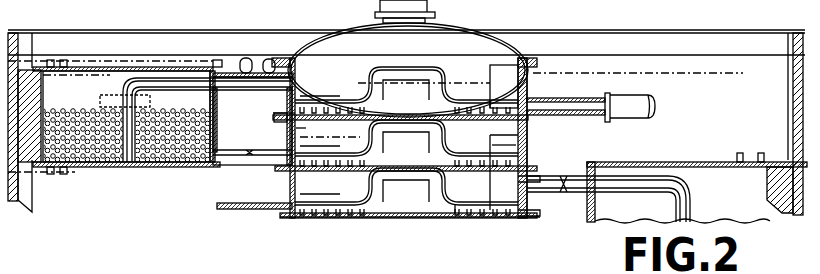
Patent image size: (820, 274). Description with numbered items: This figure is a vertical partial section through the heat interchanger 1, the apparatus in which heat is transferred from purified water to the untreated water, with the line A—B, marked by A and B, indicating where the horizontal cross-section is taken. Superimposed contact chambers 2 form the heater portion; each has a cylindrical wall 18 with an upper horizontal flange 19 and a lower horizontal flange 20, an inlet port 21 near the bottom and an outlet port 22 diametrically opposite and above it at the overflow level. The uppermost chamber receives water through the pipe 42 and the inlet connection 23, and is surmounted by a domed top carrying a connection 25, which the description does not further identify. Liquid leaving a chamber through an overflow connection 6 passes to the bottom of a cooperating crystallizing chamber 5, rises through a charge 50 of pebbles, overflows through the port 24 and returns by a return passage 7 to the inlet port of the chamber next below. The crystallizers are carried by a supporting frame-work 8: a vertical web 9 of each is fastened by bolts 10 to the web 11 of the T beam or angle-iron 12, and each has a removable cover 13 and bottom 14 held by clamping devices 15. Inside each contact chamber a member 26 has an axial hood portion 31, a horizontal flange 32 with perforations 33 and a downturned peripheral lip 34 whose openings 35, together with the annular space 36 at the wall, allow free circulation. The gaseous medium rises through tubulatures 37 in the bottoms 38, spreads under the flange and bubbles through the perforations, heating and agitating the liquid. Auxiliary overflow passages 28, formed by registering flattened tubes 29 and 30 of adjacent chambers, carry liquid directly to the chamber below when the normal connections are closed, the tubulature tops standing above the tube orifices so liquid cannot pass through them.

The heat interchanger 1 is at (410, 131).
The contact chamber 2 is at (528, 86).
The crystallizing chamber 5 is at (126, 151).
The overflow connection 6 is at (266, 59).
The return passage 7 is at (207, 212).
The supporting frame-work 8 is at (14, 33).
The vertical web 9 is at (36, 170).
The bolts 10 is at (32, 107).
The web 11 is at (45, 33).
The T beam or angle-iron 12 is at (24, 34).
The cover 13 is at (213, 67).
The bottom 14 is at (182, 167).
The clamping devices 15 is at (63, 60).
The cylindrical wall 18 is at (540, 82).
The upper horizontal flange 19 is at (283, 58).
The lower horizontal flange 20 is at (290, 104).
The inlet port 21 is at (566, 94).
The outlet port 22 is at (296, 88).
The inlet connection 23 is at (555, 104).
The overflow port 24 is at (121, 98).
The outlet pipe 25 is at (430, 7).
The member 26 is at (392, 66).
The auxiliary overflow passage 28 is at (504, 137).
The flattened tube 29 is at (490, 70).
The flattened tube 30 is at (491, 139).
The axial hood portion 31 is at (446, 68).
The horizontal flange 32 is at (348, 104).
The perforations 33 is at (465, 224).
The peripheral lip 34 is at (520, 179).
The openings 35 is at (524, 228).
The annular space 36 is at (304, 140).
The tubulatures 37 is at (386, 96).
The bottom 38 is at (456, 214).
The pipe 42 is at (654, 106).
The charge 50 is at (100, 102).
The section line A—B A is at (73, 67).
The section line A— B is at (647, 69).